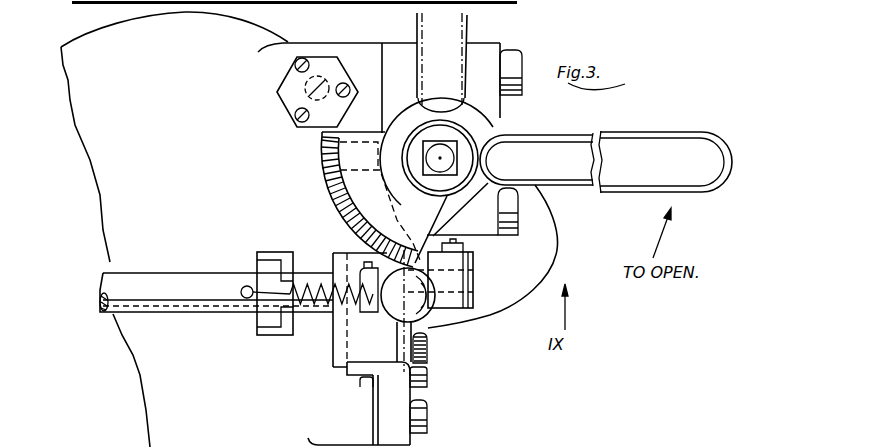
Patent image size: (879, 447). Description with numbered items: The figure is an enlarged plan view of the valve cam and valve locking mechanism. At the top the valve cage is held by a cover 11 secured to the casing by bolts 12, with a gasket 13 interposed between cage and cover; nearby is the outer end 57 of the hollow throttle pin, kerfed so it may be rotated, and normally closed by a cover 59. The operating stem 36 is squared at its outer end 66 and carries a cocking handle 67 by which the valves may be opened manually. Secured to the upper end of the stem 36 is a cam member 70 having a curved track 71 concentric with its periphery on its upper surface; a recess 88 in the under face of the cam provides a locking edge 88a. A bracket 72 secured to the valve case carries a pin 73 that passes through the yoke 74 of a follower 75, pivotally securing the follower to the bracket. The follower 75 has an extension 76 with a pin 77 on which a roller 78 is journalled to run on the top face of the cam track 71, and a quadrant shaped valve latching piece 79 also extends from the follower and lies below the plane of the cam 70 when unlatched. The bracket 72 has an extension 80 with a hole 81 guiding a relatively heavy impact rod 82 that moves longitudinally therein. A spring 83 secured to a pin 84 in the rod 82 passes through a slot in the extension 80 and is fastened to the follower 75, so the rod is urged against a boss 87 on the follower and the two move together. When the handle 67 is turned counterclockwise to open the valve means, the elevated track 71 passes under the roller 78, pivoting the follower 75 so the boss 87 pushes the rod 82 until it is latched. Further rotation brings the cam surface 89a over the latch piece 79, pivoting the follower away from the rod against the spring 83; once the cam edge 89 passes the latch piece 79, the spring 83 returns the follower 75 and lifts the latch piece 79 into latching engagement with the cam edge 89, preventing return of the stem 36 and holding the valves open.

The cover 11 is at (557, 250).
The bolts 12 is at (516, 52).
The gasket 13 is at (403, 43).
The operating stem 36 is at (448, 160).
The outer end of throttle pin 57 is at (330, 80).
The cover 59 is at (283, 97).
The squared end of operating stem 66 is at (495, 127).
The cocking handle 67 is at (660, 147).
The cam member 70 is at (322, 138).
The curved cam track 71 is at (345, 203).
The bracket 72 is at (347, 352).
The pin 73 is at (367, 387).
The yoke 74 is at (348, 368).
The follower 75 is at (420, 312).
The extension 76 is at (470, 302).
The pin 77 is at (493, 237).
The roller 78 is at (473, 267).
The valve latching piece 79 is at (473, 276).
The bracket extension 80 is at (293, 330).
The hole 81 is at (280, 318).
The impact rod 82 is at (180, 273).
The spring 83 is at (332, 258).
The pin 84 is at (247, 286).
The boss 87 is at (373, 308).
The recess 88 is at (340, 181).
The locking edge 88a is at (340, 180).
The cam edge 89 is at (297, 127).
The cam surface 89a is at (352, 153).